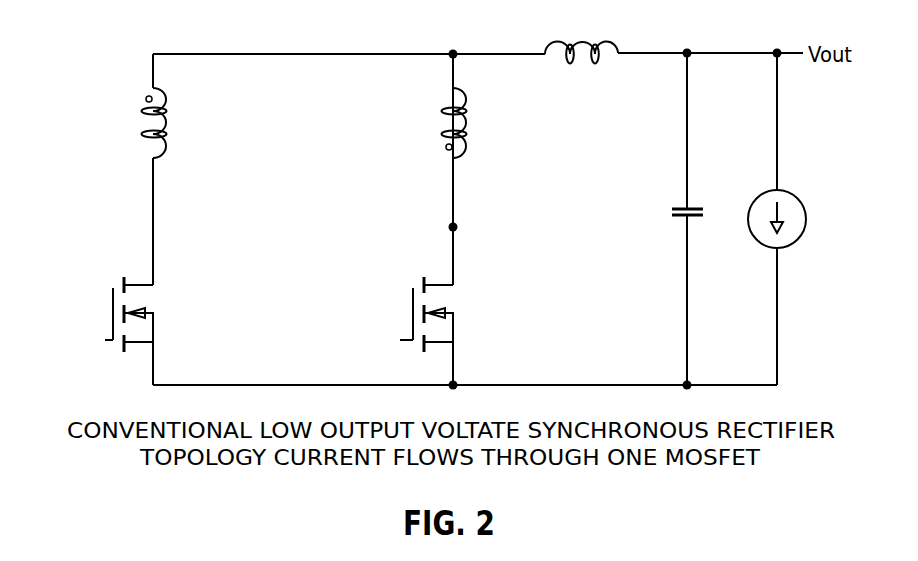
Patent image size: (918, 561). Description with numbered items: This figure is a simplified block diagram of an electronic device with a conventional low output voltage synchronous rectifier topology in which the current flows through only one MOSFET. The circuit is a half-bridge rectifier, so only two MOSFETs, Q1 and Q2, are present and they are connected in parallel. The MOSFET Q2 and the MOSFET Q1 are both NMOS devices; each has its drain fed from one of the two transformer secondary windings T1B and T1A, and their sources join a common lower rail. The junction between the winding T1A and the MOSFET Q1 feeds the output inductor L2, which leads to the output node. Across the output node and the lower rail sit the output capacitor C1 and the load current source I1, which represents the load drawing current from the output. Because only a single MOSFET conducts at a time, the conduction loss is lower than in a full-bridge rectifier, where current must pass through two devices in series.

The transformer secondary winding T1B (Lsec) T1B is at (185, 169).
The transformer secondary winding T1A (Lsec) T1A is at (485, 125).
The output inductor Lout L2 is at (581, 54).
The output capacitor Cout C1 is at (669, 219).
The load current source Iload I1 is at (793, 219).
The MOSFET Q2 is at (144, 331).
The MOSFET Q1 is at (420, 331).